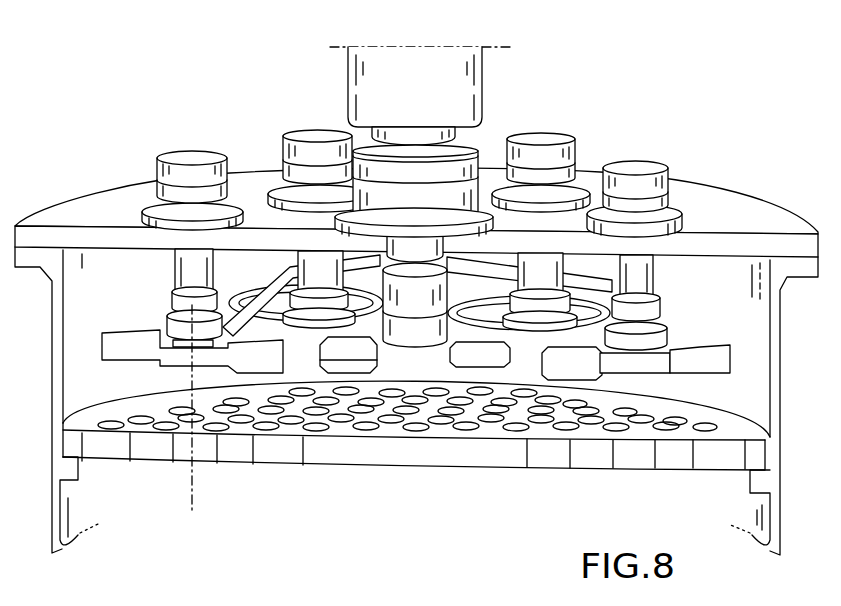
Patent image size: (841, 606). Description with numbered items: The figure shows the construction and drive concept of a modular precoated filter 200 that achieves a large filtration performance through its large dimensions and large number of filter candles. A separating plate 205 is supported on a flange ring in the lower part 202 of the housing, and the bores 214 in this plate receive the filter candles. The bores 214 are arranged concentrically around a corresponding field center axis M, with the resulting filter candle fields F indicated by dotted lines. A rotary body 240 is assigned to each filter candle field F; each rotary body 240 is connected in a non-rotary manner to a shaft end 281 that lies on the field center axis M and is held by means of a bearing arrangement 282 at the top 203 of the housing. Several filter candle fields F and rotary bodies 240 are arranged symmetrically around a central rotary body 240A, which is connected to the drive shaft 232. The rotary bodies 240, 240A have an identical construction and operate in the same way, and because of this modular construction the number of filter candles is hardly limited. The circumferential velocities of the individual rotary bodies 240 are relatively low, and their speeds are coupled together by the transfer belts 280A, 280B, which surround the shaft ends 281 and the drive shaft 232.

The precoated filter 200 is at (419, 301).
The lower part of the housing 202 is at (803, 272).
The top of the housing 203 is at (765, 210).
The separating plate 205 is at (733, 422).
The bores 214 is at (333, 430).
The drive shaft 232 is at (405, 250).
The rotary body 240 is at (123, 343).
The central rotary body 240A is at (330, 358).
The transfer belt 280A is at (240, 285).
The transfer belt 280B is at (465, 277).
The shaft end 281 is at (657, 272).
The bearing arrangement 282 is at (575, 150).
The filter candle field F is at (141, 419).
The field center axis M is at (192, 478).